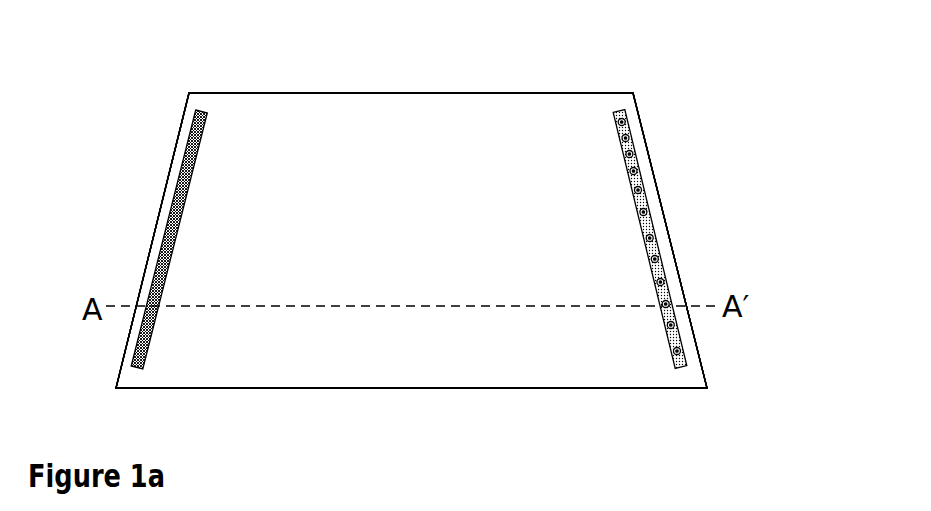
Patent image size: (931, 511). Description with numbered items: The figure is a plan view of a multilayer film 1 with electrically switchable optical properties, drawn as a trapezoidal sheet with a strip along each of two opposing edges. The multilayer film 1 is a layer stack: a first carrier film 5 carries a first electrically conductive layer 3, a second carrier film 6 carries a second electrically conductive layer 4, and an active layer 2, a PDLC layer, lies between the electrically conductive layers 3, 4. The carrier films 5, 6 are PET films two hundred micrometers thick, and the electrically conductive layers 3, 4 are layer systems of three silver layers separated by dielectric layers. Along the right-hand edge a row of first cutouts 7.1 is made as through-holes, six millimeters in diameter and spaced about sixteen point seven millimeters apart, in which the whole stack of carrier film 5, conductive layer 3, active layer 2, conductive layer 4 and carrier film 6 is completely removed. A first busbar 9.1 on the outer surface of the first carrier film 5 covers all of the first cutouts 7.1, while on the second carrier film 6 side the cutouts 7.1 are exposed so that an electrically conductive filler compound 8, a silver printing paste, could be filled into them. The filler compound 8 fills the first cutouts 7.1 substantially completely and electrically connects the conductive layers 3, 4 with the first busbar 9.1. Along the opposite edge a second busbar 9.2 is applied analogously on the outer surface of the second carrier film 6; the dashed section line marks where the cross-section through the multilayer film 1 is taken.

The multilayer film 1 is at (560, 107).
The active layer 2 is at (556, 370).
The first electrically conductive layer 3 is at (411, 278).
The second electrically conductive layer 4 is at (411, 278).
The first carrier film 5 is at (412, 278).
The second carrier film 6 is at (426, 278).
The first cutouts 7.1 is at (708, 230).
The electrically conductive filler compound 8 is at (638, 170).
The first busbar 9.1 is at (647, 231).
The second busbar 9.2 is at (170, 218).